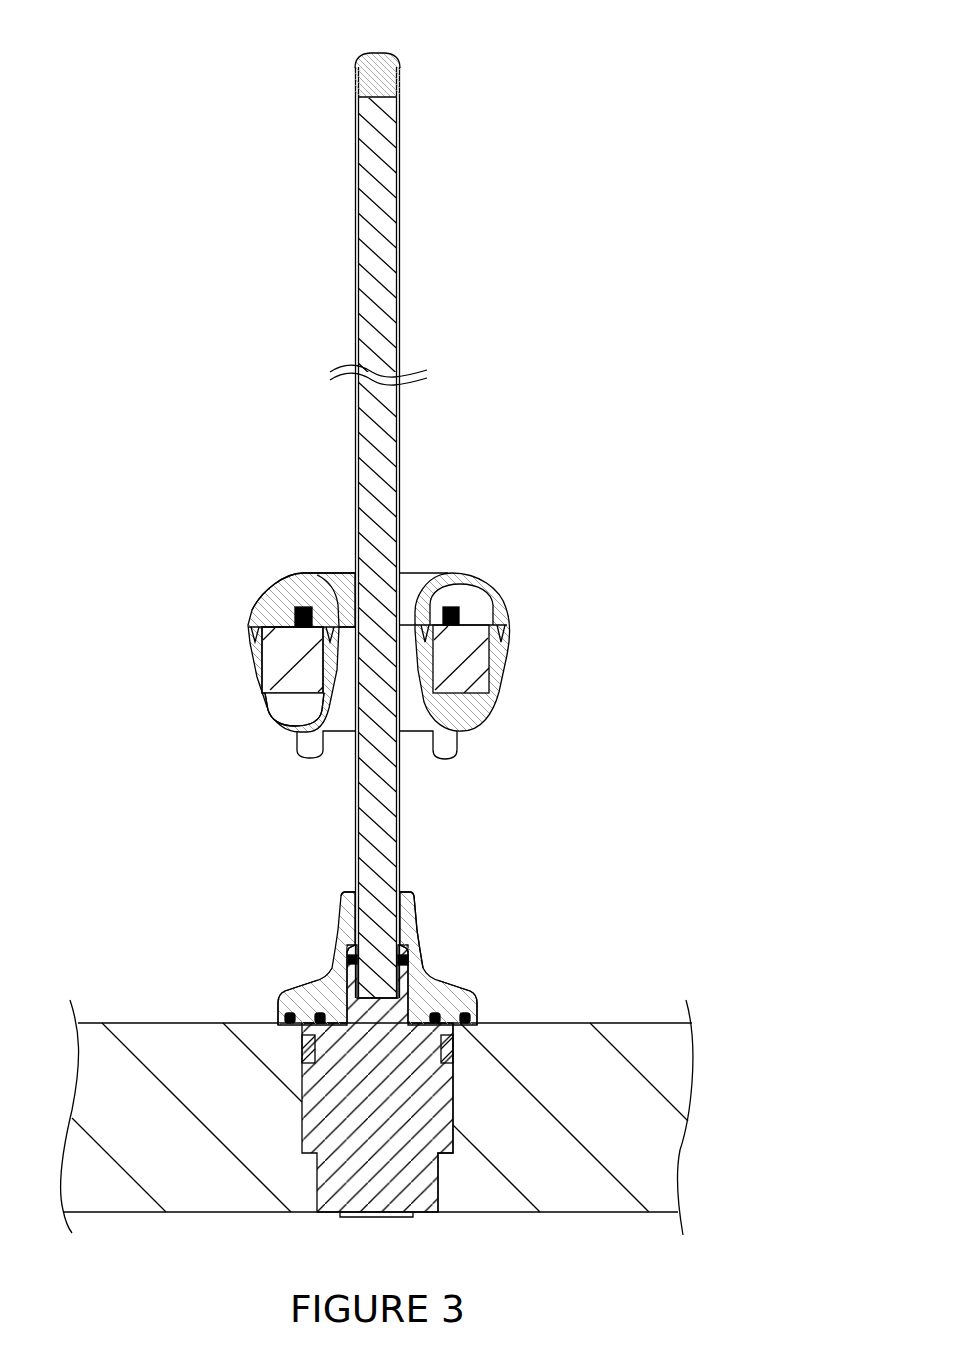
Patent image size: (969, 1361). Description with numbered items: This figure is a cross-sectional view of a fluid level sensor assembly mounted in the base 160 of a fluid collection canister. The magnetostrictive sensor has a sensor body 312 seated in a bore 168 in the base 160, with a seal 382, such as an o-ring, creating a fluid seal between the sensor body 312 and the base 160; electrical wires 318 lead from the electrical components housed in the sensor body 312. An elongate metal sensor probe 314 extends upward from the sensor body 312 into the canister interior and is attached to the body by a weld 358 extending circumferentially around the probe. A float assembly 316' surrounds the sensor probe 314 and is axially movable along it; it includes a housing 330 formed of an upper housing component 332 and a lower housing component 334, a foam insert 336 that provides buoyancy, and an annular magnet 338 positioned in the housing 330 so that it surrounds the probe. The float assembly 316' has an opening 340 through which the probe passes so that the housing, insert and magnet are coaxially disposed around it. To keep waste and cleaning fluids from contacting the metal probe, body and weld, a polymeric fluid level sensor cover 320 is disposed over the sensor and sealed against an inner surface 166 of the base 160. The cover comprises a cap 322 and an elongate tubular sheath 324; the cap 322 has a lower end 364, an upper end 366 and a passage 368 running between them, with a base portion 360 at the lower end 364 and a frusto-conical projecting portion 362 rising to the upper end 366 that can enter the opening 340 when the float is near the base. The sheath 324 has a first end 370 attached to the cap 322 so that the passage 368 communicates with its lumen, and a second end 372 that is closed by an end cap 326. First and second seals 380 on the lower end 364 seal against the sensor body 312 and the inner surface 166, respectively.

The base 160 is at (193, 1190).
The inner surface 166 is at (568, 1023).
The bore 168 is at (313, 1123).
The sensor body 312 is at (455, 1113).
The elongate metal sensor probe 314 is at (370, 303).
The float assembly 316' is at (516, 666).
The electrical wires 318 is at (362, 1214).
The fluid level sensor cover 320 is at (220, 870).
The cap 322 is at (423, 956).
The elongate tubular sheath 324 is at (402, 207).
The end cap 326 is at (387, 56).
The housing 330 is at (258, 596).
The upper housing component 332 is at (288, 573).
The lower housing component 334 is at (275, 722).
The foam insert 336 is at (275, 666).
The magnet 338 is at (463, 612).
The opening 340 is at (415, 583).
The weld 358 is at (349, 953).
The base portion 360 is at (473, 1002).
The frusto-conical projecting portion 362 is at (412, 913).
The lower end 364 is at (455, 1057).
The upper end 366 is at (407, 893).
The passage 368 is at (352, 942).
The first end 370 is at (340, 887).
The second end 372 is at (345, 72).
The seals 380 is at (318, 1013).
The seal 382 is at (300, 1050).